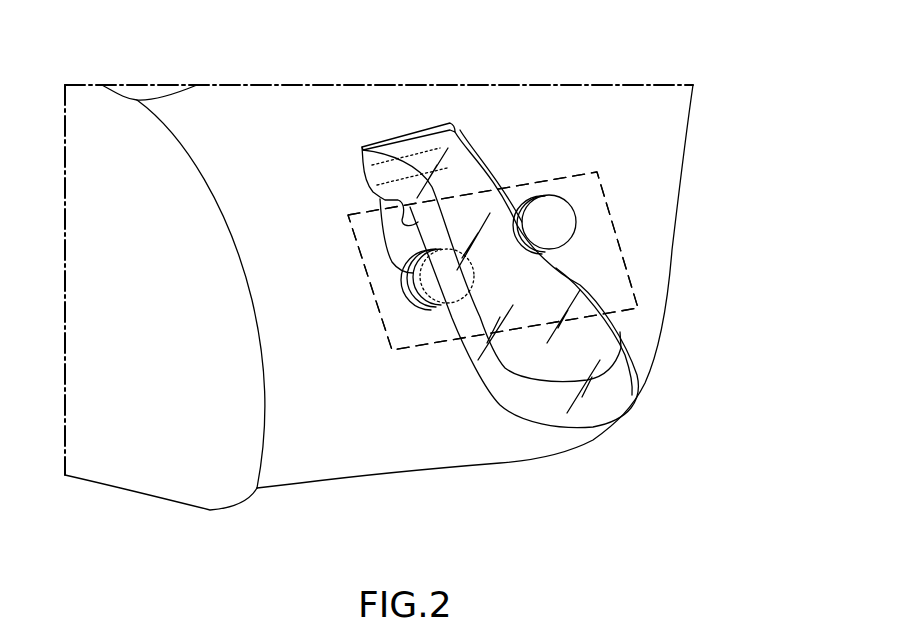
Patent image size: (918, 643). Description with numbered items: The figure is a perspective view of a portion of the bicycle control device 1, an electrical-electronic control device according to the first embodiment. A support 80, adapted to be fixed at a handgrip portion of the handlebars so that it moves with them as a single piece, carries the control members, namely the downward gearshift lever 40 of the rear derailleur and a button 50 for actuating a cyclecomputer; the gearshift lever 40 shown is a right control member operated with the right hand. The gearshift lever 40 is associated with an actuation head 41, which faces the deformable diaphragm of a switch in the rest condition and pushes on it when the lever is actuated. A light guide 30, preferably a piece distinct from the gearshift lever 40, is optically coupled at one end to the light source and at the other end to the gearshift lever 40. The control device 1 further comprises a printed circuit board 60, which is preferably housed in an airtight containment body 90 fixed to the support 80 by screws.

The bicycle control device 1 is at (620, 65).
The light guide 30 is at (430, 300).
The gearshift lever 40 is at (603, 350).
The actuation head 41 is at (382, 235).
The button 50 is at (567, 220).
The printed circuit board 60 is at (378, 312).
The support 80 is at (637, 143).
The containment body 90 is at (345, 500).